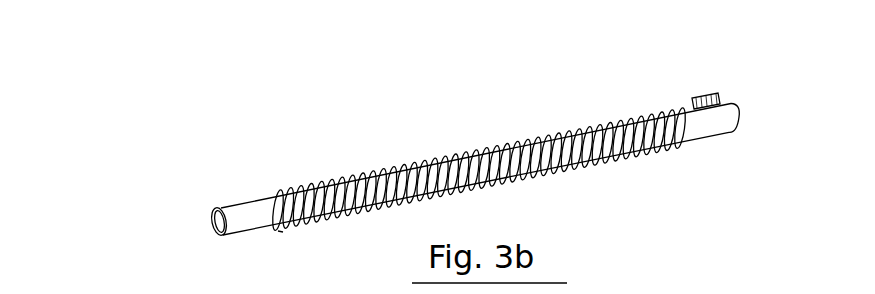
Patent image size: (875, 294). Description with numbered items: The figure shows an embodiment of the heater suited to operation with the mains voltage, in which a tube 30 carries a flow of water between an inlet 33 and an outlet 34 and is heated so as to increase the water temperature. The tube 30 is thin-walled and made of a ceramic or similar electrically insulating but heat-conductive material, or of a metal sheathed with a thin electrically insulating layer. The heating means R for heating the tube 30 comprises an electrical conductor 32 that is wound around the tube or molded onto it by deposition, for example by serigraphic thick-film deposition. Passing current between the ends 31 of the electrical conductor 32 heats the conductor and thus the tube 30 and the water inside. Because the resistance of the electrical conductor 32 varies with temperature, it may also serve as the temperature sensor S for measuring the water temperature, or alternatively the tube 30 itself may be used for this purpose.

The tube 30 is at (722, 135).
The ends of the electrical conductor 31 is at (277, 194).
The electrical conductor 32 is at (323, 218).
The inlet 33 is at (196, 232).
The outlet 34 is at (822, 97).
The temperature sensor S is at (710, 96).
The heating means R is at (457, 106).